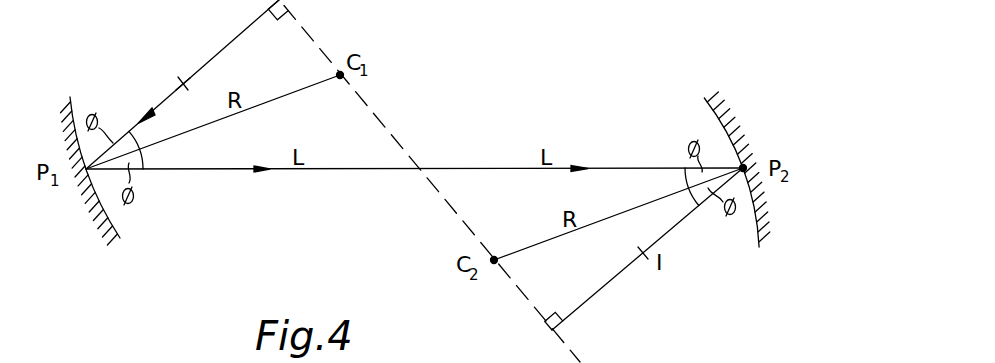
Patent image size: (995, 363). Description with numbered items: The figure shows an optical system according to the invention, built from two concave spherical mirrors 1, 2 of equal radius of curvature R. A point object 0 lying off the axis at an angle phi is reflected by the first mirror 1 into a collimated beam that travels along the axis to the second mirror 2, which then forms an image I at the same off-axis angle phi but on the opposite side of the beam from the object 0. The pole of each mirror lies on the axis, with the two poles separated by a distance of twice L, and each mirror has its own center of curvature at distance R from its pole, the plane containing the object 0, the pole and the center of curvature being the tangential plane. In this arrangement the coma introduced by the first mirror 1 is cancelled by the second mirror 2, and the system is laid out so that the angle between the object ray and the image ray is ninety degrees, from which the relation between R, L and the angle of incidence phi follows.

The point object 0 is at (178, 70).
The concave spherical mirror 1 is at (87, 219).
The concave spherical mirror 2 is at (734, 122).